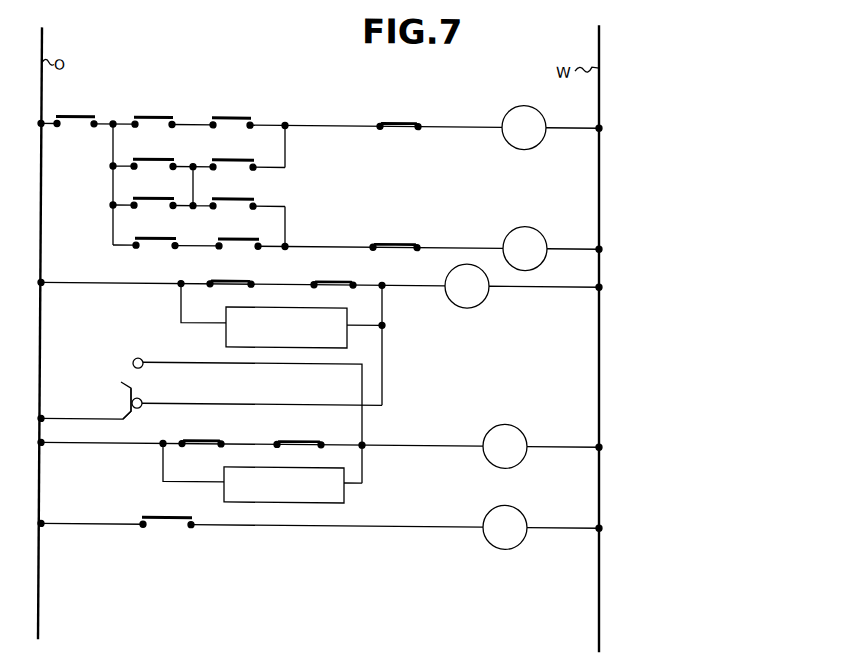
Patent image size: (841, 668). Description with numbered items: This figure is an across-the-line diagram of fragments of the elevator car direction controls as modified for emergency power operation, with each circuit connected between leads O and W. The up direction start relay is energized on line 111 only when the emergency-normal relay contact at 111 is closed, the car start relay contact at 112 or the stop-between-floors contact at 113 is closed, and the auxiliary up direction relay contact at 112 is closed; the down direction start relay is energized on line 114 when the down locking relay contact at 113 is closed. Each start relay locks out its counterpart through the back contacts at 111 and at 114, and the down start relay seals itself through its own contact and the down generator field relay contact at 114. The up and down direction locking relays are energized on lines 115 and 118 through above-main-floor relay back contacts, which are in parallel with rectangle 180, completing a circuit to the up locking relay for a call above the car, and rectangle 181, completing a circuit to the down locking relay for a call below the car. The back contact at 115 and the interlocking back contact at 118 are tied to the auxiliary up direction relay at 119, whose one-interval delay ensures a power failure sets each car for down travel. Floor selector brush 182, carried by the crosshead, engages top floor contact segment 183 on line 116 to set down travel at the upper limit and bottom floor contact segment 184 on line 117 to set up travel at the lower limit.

The circuit line for up direction start relay U 111 is at (373, 125).
The circuit line with contacts CS and ULA 112 is at (374, 187).
The circuit line with contacts SBF and DL 113 is at (374, 208).
The circuit line for down direction start relay D 114 is at (411, 246).
The circuit line for up direction locking relay UL 115 is at (338, 284).
The circuit line for top floor contact segment 116 is at (390, 404).
The circuit line for bottom floor contact segment 117 is at (338, 403).
The circuit line for down direction locking relay DL 118 is at (375, 445).
The circuit line for auxiliary up direction relay ULA 119 is at (379, 525).
The call above car circuit rectangle 180 is at (298, 345).
The call below car circuit rectangle 181 is at (310, 500).
The floor selector brush 182 is at (130, 401).
The top floor contact segment 183 is at (142, 358).
The bottom floor contact segment 184 is at (141, 406).